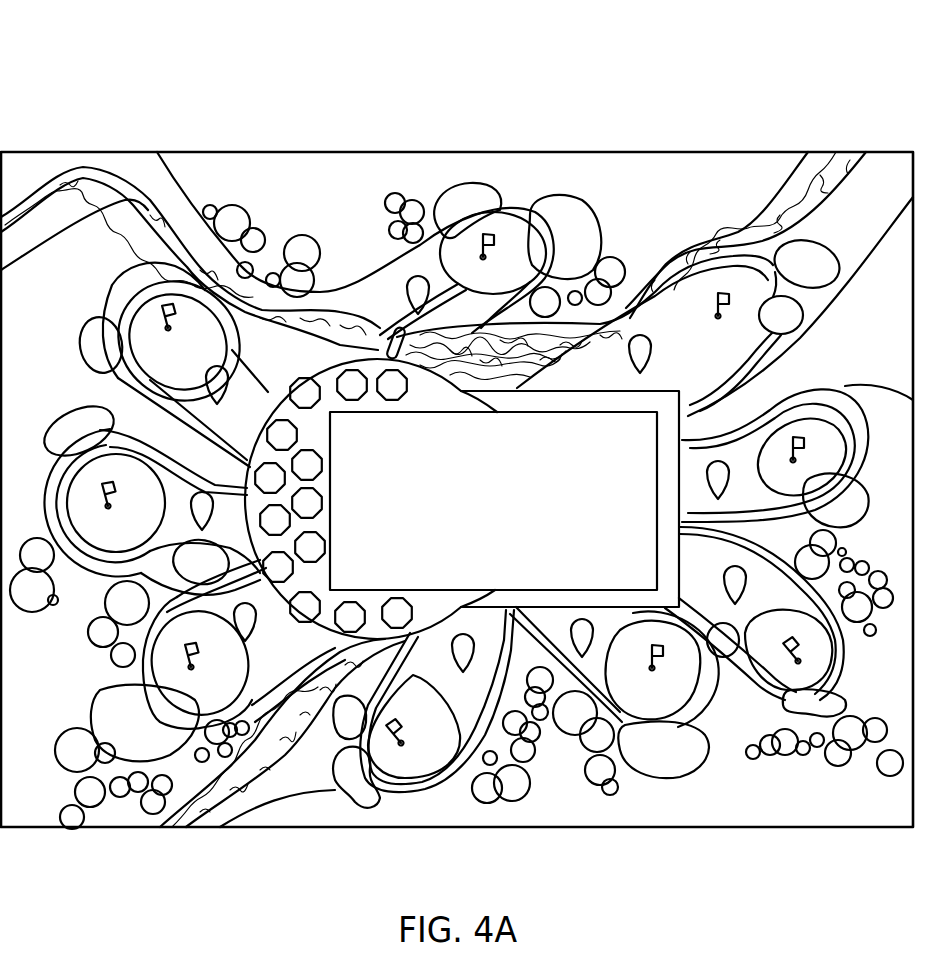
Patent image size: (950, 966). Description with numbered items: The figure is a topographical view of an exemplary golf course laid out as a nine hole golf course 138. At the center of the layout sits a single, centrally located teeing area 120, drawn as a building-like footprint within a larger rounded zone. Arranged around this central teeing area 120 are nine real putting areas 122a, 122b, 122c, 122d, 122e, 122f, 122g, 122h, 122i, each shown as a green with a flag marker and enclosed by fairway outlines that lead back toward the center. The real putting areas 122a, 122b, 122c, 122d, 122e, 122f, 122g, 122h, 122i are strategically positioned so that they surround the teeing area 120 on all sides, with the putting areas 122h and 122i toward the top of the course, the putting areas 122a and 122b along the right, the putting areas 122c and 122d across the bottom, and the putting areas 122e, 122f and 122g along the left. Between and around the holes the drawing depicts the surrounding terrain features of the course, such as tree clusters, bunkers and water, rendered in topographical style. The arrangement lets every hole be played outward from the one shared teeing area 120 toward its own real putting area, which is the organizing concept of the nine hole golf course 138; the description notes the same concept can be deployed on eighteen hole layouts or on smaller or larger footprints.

The nine hole golf course 138 is at (172, 95).
The teeing area 120 is at (512, 523).
The real putting area 122a is at (819, 487).
The real putting area 122b is at (812, 636).
The real putting area 122c is at (672, 702).
The real putting area 122d is at (446, 721).
The real putting area 122e is at (232, 699).
The real putting area 122f is at (140, 536).
The real putting area 122g is at (200, 361).
The real putting area 122h is at (514, 285).
The real putting area 122i is at (718, 356).